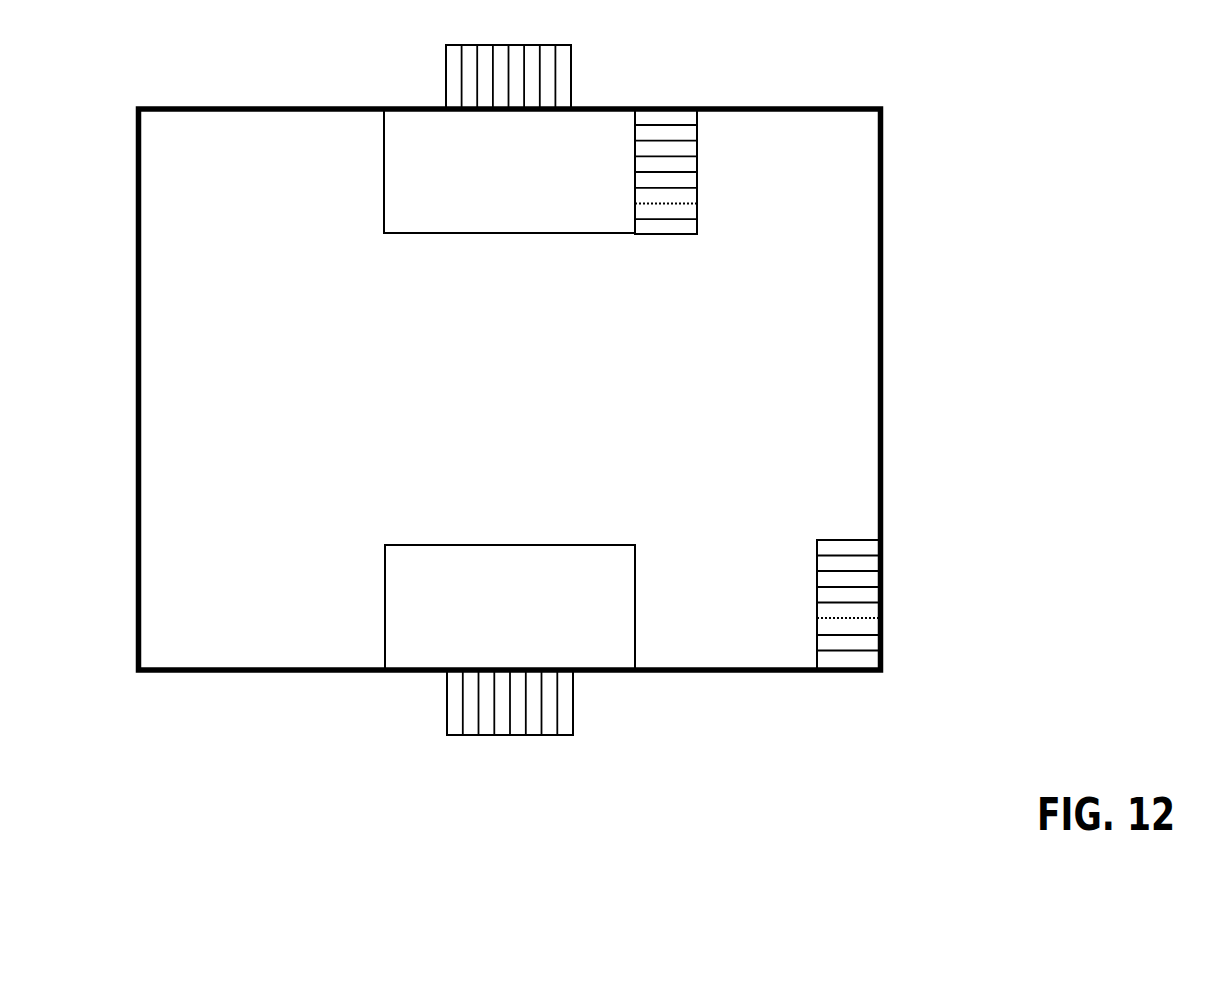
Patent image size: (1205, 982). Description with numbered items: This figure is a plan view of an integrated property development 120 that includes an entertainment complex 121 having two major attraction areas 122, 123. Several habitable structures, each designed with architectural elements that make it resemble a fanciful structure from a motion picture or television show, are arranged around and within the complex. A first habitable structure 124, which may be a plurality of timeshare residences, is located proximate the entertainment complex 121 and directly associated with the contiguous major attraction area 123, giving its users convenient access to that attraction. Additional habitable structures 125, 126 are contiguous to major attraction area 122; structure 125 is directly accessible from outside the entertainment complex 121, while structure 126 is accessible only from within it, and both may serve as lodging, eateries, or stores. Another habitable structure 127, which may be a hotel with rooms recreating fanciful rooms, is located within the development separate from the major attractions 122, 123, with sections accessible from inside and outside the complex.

The integrated property development 120 is at (596, 390).
The entertainment complex 121 is at (896, 419).
The major attraction area 122 is at (509, 171).
The major attraction area 123 is at (510, 607).
The first habitable structure 124 is at (590, 703).
The habitable structure 125 is at (588, 73).
The habitable structure 126 is at (710, 203).
The habitable structure 127 is at (804, 572).